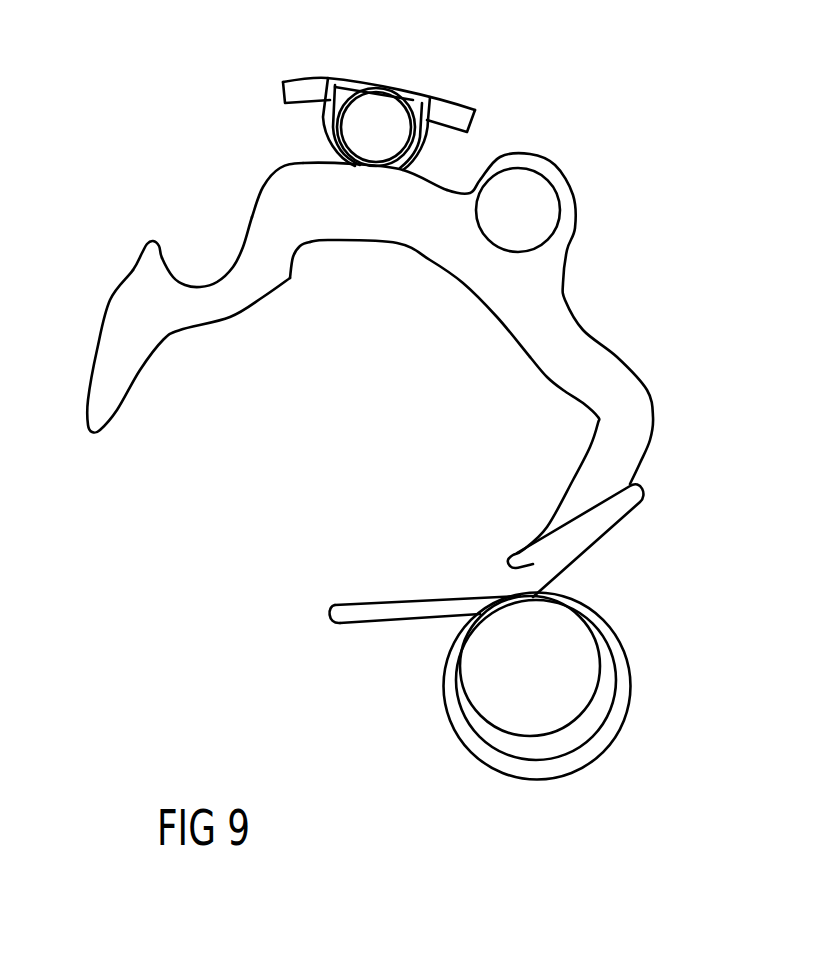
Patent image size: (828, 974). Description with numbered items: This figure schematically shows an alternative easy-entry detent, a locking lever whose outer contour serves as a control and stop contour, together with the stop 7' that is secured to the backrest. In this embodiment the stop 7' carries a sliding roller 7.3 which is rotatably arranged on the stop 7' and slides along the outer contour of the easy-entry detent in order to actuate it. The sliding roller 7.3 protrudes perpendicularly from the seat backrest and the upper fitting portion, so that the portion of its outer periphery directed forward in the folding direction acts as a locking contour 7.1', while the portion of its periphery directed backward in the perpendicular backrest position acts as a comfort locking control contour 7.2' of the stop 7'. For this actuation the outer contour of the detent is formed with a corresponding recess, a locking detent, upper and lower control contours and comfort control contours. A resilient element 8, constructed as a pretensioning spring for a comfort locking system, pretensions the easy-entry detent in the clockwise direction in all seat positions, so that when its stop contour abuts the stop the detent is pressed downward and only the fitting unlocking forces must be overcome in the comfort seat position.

The stop 7' is at (399, 107).
The locking contour 7.1' is at (300, 92).
The comfort locking control contour 7.2' is at (457, 98).
The sliding roller 7.3 is at (376, 115).
The resilient element 8 is at (618, 673).